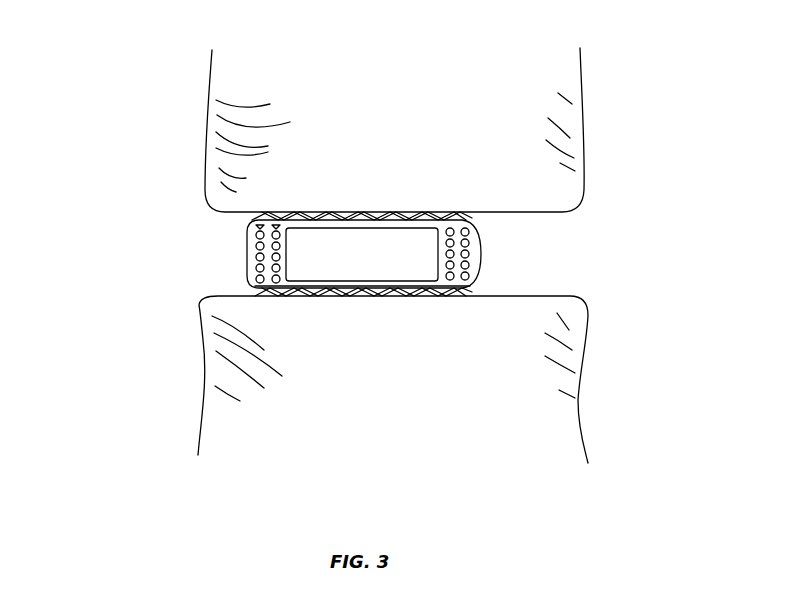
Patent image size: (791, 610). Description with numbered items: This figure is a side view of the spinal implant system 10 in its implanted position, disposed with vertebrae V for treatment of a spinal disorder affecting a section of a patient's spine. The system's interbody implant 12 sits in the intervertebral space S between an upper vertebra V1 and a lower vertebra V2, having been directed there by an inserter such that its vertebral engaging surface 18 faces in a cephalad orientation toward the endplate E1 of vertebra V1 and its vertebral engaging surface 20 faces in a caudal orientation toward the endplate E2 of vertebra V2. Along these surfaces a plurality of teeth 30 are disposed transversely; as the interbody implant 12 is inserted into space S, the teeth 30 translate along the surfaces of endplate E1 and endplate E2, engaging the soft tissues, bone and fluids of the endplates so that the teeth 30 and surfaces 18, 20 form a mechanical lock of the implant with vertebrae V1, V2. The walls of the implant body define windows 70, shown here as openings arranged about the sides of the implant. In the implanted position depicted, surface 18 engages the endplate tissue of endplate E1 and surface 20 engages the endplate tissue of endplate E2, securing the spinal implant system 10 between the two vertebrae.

The spinal implant system 10 is at (687, 133).
The interbody implant 12 is at (387, 257).
The vertebral engaging surface 18 is at (433, 212).
The vertebral engaging surface 20 is at (447, 290).
The tooth 30 is at (368, 212).
The windows 70 is at (440, 258).
The vertebrae V is at (148, 128).
The vertebra V1 is at (240, 90).
The vertebra V2 is at (232, 340).
The intervertebral space S is at (160, 282).
The endplate E1 is at (316, 212).
The endplate E2 is at (315, 296).